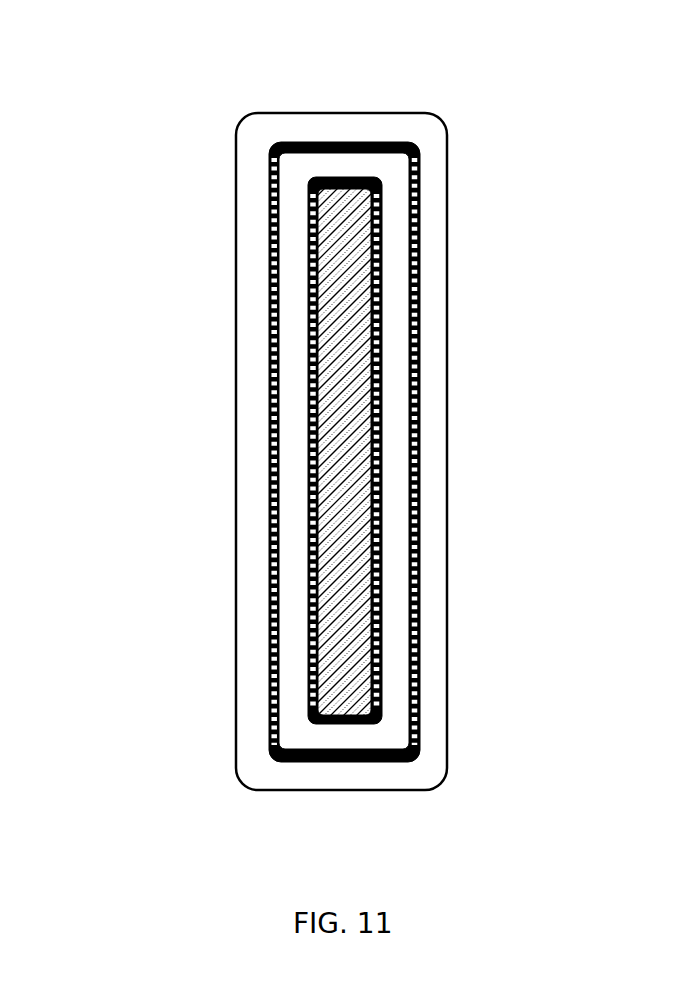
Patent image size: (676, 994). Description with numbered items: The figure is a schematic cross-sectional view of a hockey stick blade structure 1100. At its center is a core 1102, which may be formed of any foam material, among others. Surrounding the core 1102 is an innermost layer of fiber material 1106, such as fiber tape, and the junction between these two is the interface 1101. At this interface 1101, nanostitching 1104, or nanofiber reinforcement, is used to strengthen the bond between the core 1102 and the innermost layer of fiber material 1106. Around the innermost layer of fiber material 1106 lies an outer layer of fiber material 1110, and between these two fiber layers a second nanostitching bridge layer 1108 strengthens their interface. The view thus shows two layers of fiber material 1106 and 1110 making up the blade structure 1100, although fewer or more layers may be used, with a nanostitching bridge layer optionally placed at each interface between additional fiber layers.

The hockey stick blade structure 1100 is at (121, 113).
The interface 1101 is at (373, 683).
The core 1102 is at (352, 400).
The nanostitching 1104 is at (375, 445).
The innermost layer of fiber material 1106 is at (393, 490).
The second nanostitching bridge layer 1108 is at (418, 548).
The outer layer of fiber material 1110 is at (435, 602).